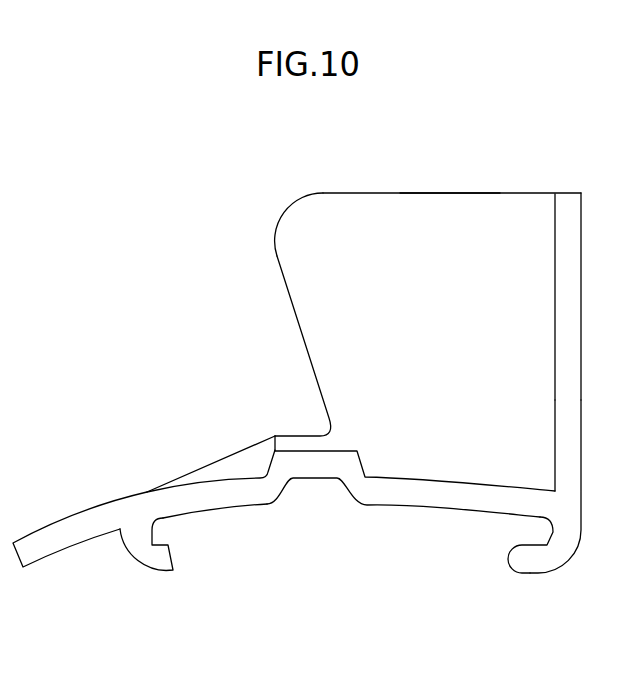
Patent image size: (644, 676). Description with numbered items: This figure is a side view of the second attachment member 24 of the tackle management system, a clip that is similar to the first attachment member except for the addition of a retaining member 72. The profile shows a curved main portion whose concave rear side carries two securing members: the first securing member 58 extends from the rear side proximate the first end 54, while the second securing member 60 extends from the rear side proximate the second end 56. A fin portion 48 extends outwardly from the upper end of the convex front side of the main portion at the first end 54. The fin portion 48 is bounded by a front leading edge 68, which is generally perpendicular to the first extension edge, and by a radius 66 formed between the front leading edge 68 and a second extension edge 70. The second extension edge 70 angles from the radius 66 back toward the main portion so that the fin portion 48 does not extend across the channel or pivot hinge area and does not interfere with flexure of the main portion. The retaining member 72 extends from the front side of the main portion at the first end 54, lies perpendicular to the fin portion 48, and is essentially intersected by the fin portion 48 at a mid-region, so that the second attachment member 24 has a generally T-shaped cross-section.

The second attachment member 24 is at (450, 165).
The fin portion 48 is at (356, 207).
The first end 54 is at (567, 501).
The second end 56 is at (62, 537).
The first securing member 58 is at (540, 560).
The second securing member 60 is at (157, 557).
The radius 66 is at (278, 227).
The front leading edge 68 is at (443, 194).
The second extension edge 70 is at (305, 340).
The retaining member 72 is at (572, 263).